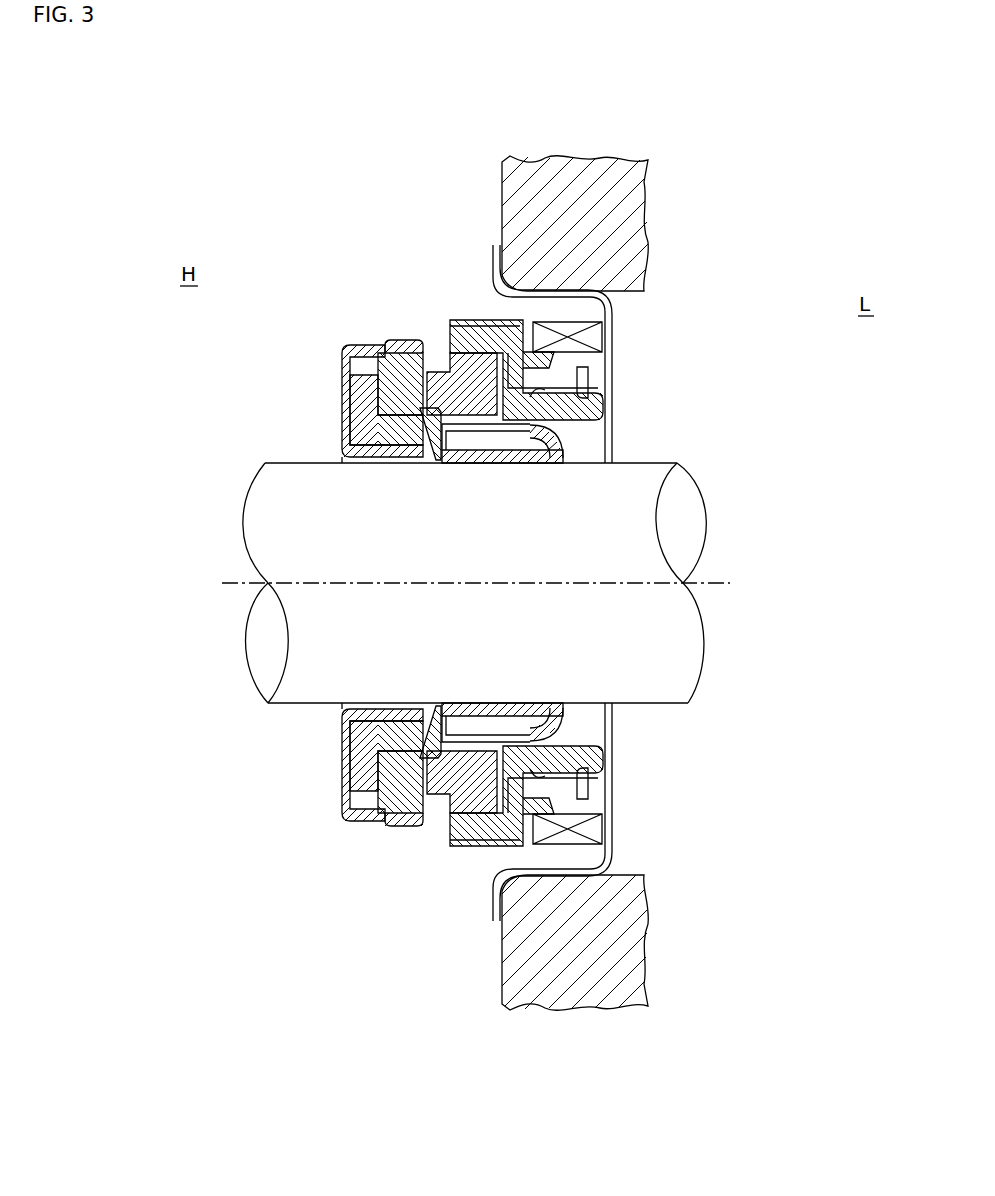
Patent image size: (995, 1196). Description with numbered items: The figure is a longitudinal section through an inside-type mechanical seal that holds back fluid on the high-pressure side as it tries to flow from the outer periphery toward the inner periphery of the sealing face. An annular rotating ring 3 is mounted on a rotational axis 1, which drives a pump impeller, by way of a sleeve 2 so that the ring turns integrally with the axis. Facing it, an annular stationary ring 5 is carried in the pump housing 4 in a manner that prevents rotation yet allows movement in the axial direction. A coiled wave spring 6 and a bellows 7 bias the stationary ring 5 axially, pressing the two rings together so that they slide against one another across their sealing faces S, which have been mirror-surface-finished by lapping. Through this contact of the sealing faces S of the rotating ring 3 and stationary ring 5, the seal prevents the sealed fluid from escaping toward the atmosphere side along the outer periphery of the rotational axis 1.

The rotational axis 1 is at (387, 553).
The sleeve 2 is at (340, 406).
The rotating ring 3 is at (380, 353).
The housing 4 is at (562, 172).
The stationary ring 5 is at (447, 372).
The coiled wave spring 6 is at (592, 345).
The bellows 7 is at (493, 333).
The sealing faces S is at (440, 457).